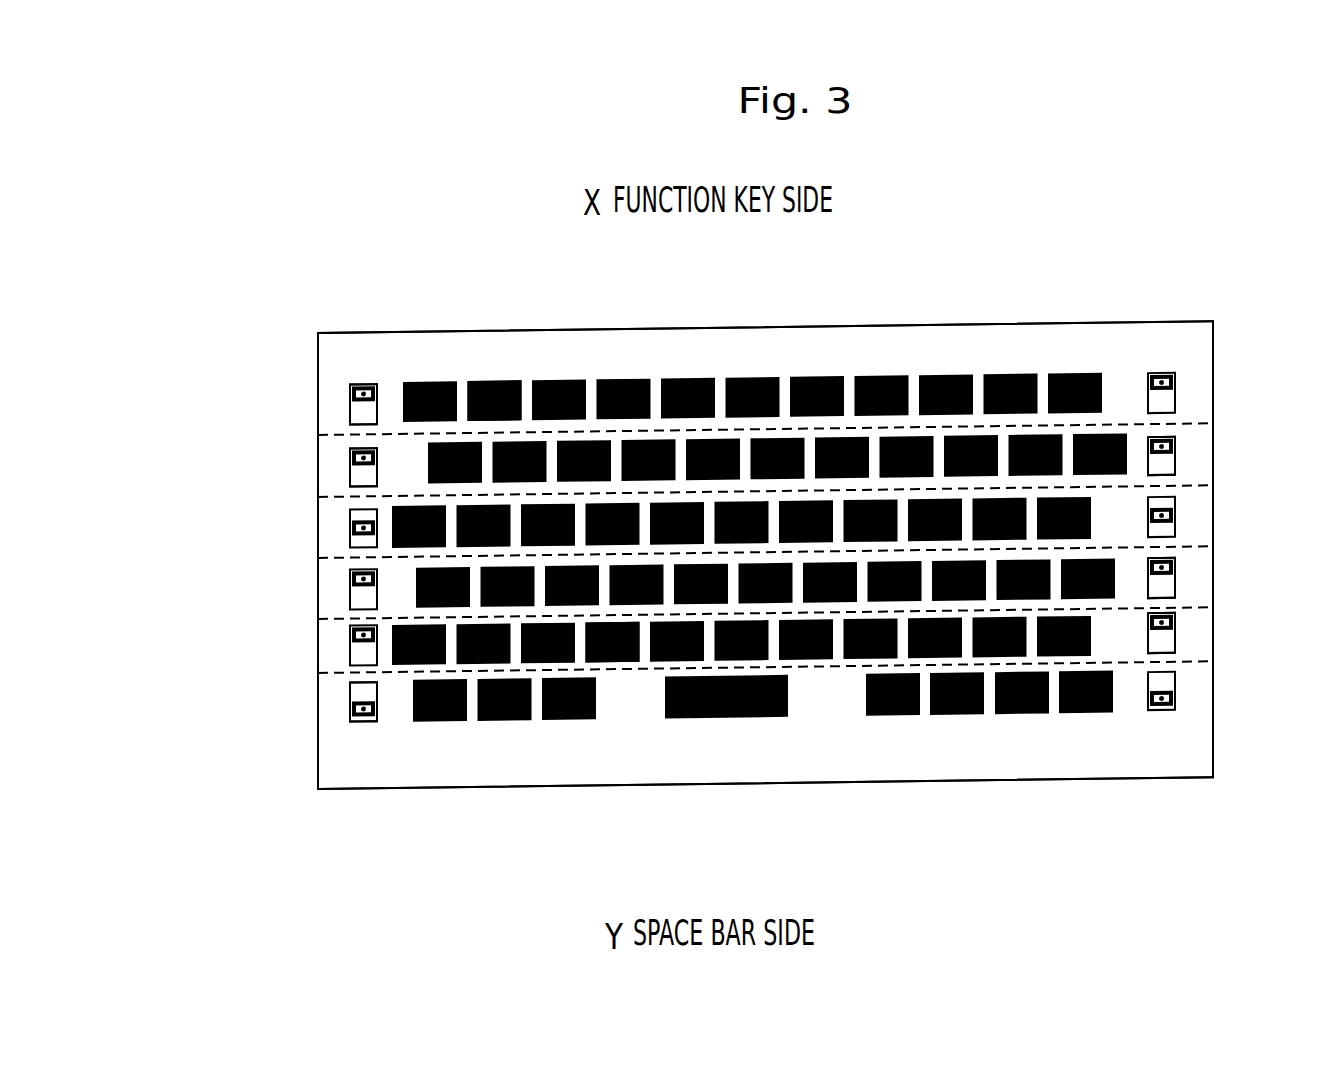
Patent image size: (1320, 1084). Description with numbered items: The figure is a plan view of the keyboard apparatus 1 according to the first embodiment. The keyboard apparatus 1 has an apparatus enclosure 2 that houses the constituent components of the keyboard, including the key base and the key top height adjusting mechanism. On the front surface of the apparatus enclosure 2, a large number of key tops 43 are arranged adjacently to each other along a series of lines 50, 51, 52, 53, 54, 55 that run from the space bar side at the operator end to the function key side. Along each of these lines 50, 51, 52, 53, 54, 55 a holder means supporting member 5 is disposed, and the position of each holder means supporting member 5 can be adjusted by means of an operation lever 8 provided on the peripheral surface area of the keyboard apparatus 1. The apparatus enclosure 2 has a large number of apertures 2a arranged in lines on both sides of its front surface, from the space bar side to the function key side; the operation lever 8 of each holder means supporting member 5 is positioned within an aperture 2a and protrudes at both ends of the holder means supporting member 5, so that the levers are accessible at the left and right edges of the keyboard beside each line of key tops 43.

The keyboard apparatus 1 is at (886, 279).
The apparatus enclosure 2 is at (1133, 766).
The aperture 2a is at (357, 424).
The holder means supporting member 5 is at (353, 395).
The operation lever 8 is at (357, 393).
The key top 43 is at (509, 386).
The line 50 is at (392, 403).
The line 51 is at (390, 448).
The line 52 is at (391, 514).
The line 53 is at (352, 621).
The line 54 is at (387, 667).
The line 55 is at (392, 720).